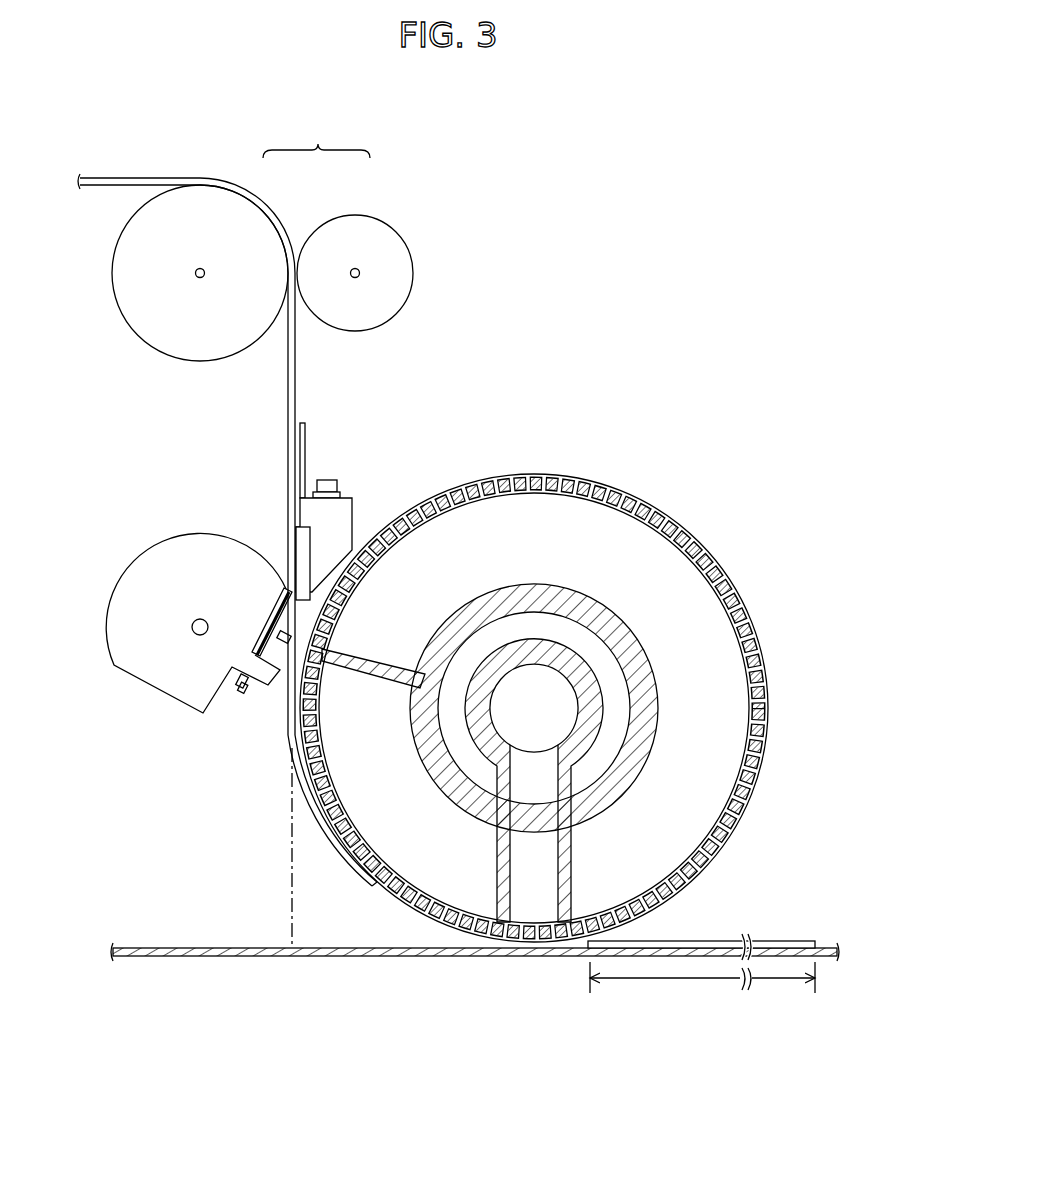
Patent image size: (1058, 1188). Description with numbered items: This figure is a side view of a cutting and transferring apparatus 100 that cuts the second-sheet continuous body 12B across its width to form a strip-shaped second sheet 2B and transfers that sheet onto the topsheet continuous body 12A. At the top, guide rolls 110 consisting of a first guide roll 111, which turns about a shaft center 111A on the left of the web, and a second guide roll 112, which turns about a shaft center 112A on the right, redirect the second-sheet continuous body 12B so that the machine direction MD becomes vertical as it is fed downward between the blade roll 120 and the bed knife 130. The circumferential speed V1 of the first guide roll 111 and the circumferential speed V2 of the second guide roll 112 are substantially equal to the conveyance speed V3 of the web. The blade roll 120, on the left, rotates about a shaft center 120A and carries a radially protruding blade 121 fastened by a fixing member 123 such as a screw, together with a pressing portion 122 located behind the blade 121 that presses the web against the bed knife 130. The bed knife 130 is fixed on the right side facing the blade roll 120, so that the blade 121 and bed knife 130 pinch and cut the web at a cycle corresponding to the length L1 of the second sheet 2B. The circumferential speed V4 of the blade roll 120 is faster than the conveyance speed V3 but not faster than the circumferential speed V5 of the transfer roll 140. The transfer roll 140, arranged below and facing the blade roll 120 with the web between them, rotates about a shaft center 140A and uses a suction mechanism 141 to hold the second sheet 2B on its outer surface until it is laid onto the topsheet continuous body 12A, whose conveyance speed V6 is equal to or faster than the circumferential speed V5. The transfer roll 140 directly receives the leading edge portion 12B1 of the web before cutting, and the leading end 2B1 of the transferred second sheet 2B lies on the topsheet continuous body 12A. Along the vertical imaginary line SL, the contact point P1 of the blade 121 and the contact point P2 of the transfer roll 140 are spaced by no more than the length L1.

The cutting and transferring apparatus 100 is at (620, 258).
The guide rolls 110 is at (316, 138).
The first guide roll 111 is at (253, 202).
The shaft center of first guide roll 111A is at (195, 278).
The second guide roll 112 is at (352, 214).
The shaft center of second guide roll 112A is at (360, 273).
The second-sheet continuous body 12B is at (288, 397).
The edge portion of second-sheet continuous body 12B1 is at (370, 887).
The topsheet continuous body 12A is at (341, 957).
The second sheet 2B is at (736, 940).
The leading end of sheet piece 2B1 is at (587, 950).
The blade roll 120 is at (143, 572).
The shaft center of blade roll 120A is at (195, 633).
The blade 121 is at (272, 630).
The pressing portion 122 is at (296, 560).
The fixing member 123 is at (232, 697).
The bed knife 130 is at (306, 553).
The transfer roll 140 is at (653, 547).
The shaft center of transfer roll 140A is at (557, 710).
The suction mechanism 141 is at (643, 782).
The contact point of blade P1 is at (292, 742).
The contact point of transfer roll P2 is at (290, 590).
The imaginary line SL is at (291, 952).
The length of second sheet L1 is at (702, 989).
The circumferential speed of first guide roll V1 is at (257, 242).
The circumferential speed of second guide roll V2 is at (323, 243).
The conveyance speed of second-sheet continuous body V3 is at (155, 173).
The circumferential speed of blade roll V4 is at (133, 598).
The circumferential speed of transfer roll V5 is at (452, 539).
The conveyance speed of topsheet continuous body V6 is at (122, 977).
The machine direction MD is at (314, 345).